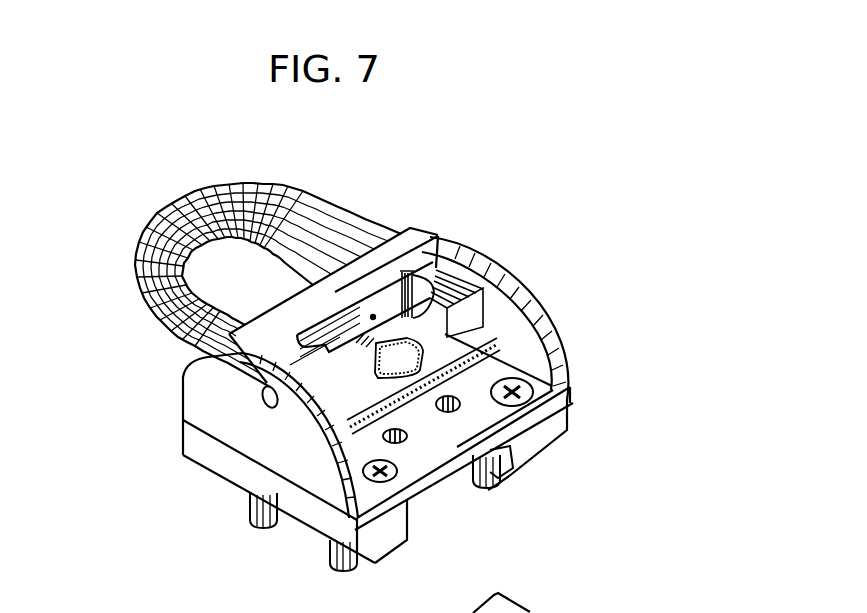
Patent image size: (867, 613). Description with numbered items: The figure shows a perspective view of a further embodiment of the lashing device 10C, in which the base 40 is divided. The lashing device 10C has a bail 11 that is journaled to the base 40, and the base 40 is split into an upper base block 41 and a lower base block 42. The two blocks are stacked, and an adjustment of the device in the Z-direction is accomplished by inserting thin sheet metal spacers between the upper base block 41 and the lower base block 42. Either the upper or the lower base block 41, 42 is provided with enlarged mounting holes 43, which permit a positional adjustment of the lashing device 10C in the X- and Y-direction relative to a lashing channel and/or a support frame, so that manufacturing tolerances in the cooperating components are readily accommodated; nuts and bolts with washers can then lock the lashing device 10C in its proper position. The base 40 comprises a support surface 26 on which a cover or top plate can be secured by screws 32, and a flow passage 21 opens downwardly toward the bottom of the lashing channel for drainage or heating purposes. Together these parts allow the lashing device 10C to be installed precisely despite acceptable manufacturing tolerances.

The lashing device 10C is at (532, 205).
The bail 11 is at (138, 246).
The flow passage 21 is at (490, 490).
The support surface 26 is at (446, 444).
The screws 32 is at (563, 378).
The base 40 is at (178, 533).
The upper base block 41 is at (517, 307).
The lower base block 42 is at (540, 420).
The enlarged mounting holes 43 is at (573, 612).